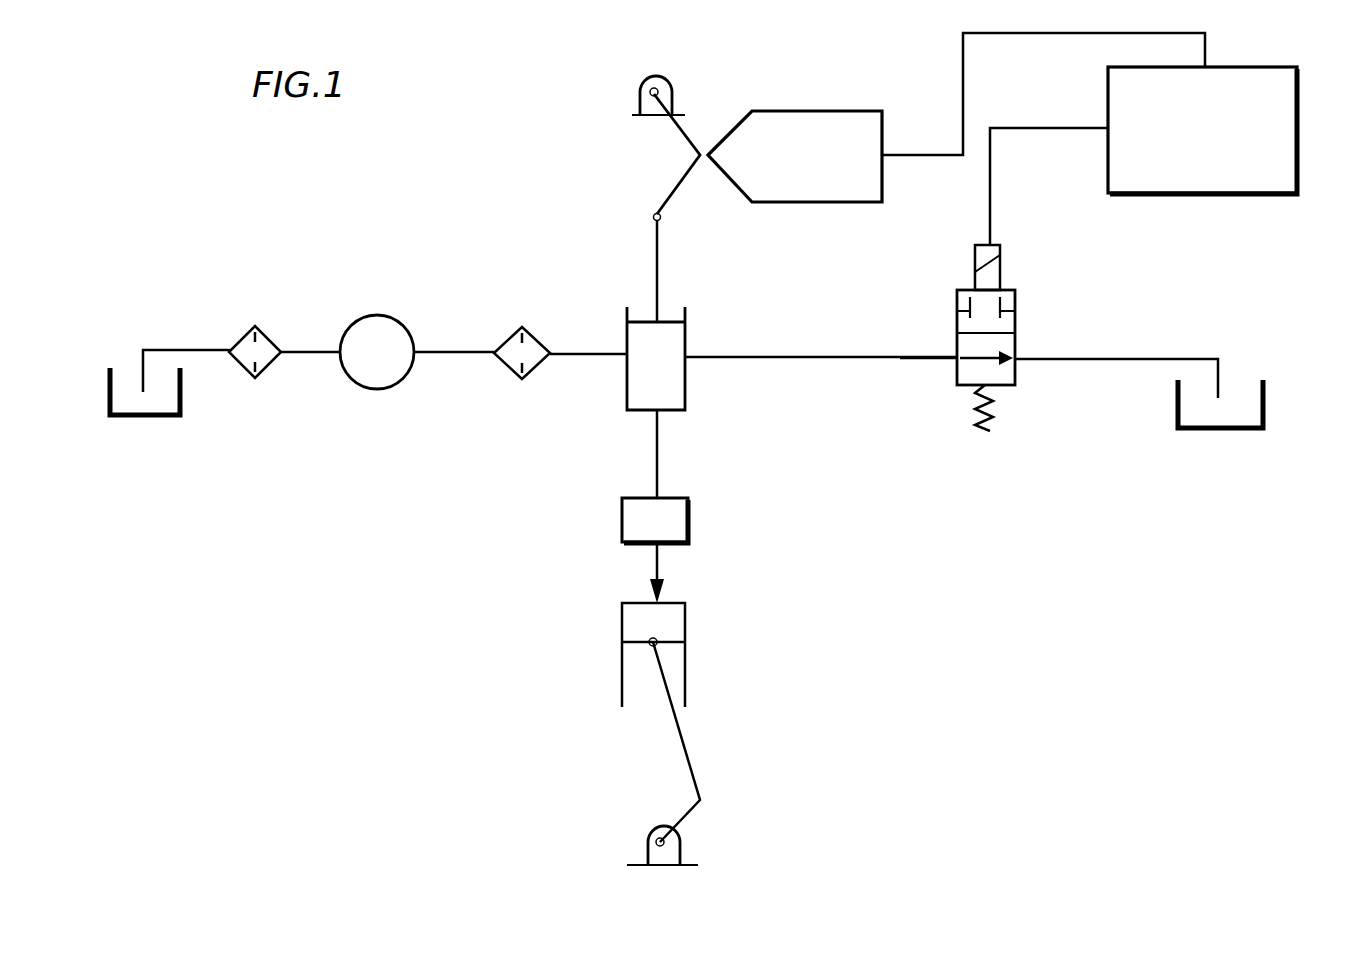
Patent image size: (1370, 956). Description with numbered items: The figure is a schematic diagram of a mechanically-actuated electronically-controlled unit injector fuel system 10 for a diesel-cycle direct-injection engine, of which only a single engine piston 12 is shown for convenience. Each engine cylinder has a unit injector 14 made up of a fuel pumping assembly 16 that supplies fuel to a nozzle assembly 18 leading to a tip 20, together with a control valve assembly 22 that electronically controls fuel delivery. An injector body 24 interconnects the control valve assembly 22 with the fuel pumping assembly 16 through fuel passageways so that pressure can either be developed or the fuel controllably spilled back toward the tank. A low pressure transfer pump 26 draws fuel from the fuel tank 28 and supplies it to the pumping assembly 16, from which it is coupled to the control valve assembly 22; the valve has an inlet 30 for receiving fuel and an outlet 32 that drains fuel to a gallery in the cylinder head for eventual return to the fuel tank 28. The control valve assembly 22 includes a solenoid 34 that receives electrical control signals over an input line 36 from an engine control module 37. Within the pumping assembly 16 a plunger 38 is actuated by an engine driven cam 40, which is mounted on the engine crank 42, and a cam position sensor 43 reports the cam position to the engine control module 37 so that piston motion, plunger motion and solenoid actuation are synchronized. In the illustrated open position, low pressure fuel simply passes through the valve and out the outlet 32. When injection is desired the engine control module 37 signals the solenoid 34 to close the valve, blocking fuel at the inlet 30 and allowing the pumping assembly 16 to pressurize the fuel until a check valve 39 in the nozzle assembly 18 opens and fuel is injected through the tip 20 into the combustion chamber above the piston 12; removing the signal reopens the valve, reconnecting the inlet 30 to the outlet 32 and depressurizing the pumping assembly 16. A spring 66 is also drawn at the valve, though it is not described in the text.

The injector fuel system 10 is at (516, 108).
The engine piston 12 is at (686, 618).
The mechanically-actuated electronically-controlled unit injector 14 is at (926, 280).
The fuel pumping assembly 16 is at (627, 330).
The nozzle assembly 18 is at (657, 438).
The tip 20 is at (657, 570).
The control valve assembly 22 is at (1016, 298).
The injector body 24 is at (778, 358).
The low pressure transfer pump 26 is at (376, 316).
The fuel tank 28 is at (108, 372).
The inlet 30 is at (932, 365).
The outlet 32 is at (1032, 359).
The solenoid 34 is at (1002, 247).
The input line 36 is at (1040, 128).
The engine control module 37 is at (1297, 168).
The plunger 38 is at (655, 232).
The check valve 39 is at (690, 512).
The cam 40 is at (688, 128).
The engine crank 42 is at (681, 830).
The cam position sensor 43 is at (864, 111).
The return spring 66 is at (1000, 420).